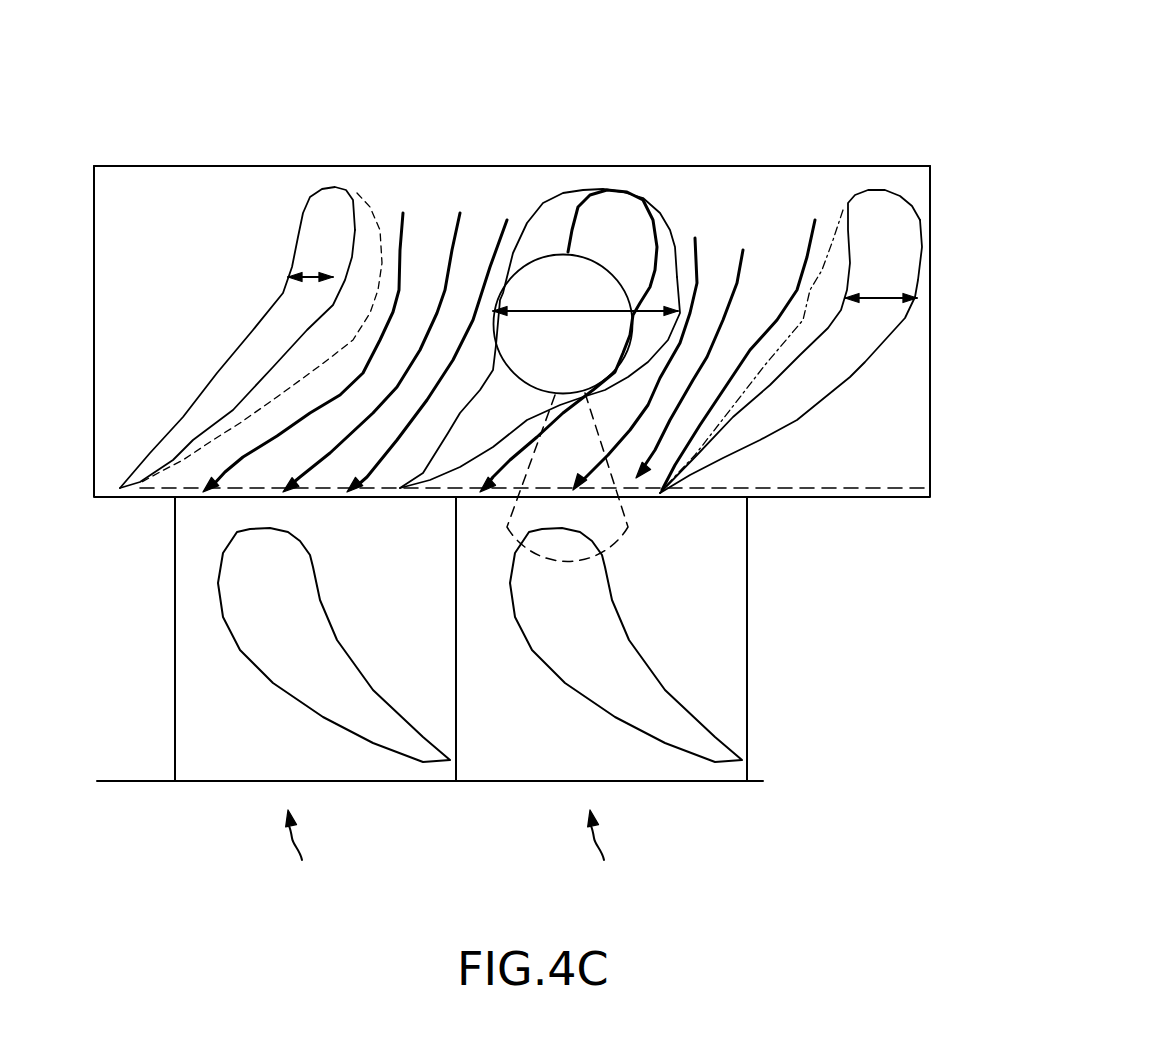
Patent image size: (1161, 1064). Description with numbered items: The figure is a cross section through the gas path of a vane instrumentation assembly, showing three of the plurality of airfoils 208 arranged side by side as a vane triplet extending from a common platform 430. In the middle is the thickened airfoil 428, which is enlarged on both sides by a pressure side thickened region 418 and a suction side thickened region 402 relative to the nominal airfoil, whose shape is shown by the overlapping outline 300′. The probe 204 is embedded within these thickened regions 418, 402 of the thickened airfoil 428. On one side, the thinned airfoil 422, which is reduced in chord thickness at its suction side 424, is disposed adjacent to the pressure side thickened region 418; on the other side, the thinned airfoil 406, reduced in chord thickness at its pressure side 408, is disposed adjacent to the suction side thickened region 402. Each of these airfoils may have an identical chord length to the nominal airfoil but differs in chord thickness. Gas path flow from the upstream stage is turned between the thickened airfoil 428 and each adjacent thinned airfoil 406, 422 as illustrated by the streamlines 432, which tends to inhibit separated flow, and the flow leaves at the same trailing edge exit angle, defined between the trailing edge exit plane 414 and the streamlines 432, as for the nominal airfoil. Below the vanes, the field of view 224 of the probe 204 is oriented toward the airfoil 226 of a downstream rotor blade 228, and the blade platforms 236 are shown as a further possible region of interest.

The plurality of airfoils 208 is at (777, 73).
The thickened airfoil 428 is at (601, 150).
The pressure side thickened region 418 is at (555, 220).
The common platform 430 is at (777, 186).
The streamlines 432 is at (403, 212).
The suction side thickened region 402 is at (668, 244).
The thinned airfoil 422 is at (309, 236).
The suction side 424 is at (322, 308).
The thinned airfoil 406 is at (864, 254).
The pressure side 408 is at (817, 335).
The probe 204 is at (542, 349).
The nominal airfoil outline 300′ is at (650, 284).
The trailing edge exit plane 414 is at (148, 488).
The field of view 224 is at (630, 527).
The airfoil 226 is at (257, 624).
The blade platforms 236 is at (222, 782).
The downstream rotor blade 228 is at (451, 851).